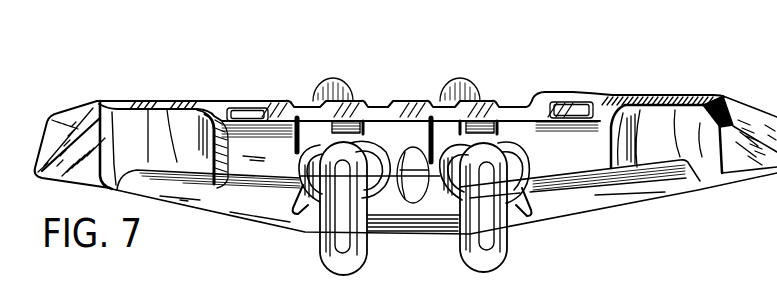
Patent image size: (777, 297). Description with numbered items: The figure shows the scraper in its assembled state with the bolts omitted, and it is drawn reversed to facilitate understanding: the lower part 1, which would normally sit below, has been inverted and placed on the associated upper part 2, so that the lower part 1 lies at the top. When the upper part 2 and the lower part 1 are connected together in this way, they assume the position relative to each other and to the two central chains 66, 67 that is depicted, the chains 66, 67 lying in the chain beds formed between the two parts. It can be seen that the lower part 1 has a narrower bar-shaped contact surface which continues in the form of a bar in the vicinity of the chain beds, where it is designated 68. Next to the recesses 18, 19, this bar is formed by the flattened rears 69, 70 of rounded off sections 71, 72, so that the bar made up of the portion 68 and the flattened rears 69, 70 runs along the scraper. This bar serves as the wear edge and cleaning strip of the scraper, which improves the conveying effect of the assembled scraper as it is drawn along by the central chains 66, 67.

The lower part 1 is at (611, 89).
The upper part 2 is at (651, 200).
The recess 18 is at (252, 108).
The recess 19 is at (572, 106).
The central chain 66 is at (318, 249).
The central chain 67 is at (512, 254).
The bar 68 is at (437, 107).
The flattened rear 69 is at (148, 110).
The flattened rear 70 is at (673, 98).
The rounded off section 71 is at (133, 136).
The rounded off section 72 is at (697, 143).